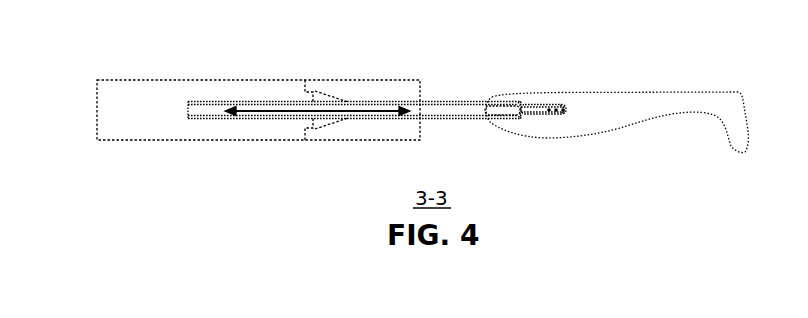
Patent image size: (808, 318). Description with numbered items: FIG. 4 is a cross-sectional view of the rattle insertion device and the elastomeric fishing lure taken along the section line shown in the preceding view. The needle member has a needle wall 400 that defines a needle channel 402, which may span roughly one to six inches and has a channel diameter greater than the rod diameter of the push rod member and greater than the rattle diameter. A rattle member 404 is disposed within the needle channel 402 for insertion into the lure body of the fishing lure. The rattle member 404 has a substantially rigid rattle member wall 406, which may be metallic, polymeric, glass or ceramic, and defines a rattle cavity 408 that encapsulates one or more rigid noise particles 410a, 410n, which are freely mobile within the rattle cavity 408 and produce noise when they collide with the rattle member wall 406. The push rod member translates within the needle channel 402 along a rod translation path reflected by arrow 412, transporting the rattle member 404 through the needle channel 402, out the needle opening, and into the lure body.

The needle wall 400 is at (472, 103).
The needle channel 402 is at (521, 101).
The rattle member 404 is at (541, 110).
The rattle member wall 406 is at (533, 114).
The rattle cavity 408 is at (532, 110).
The noise particle 410a is at (548, 114).
The noise particle 410n is at (565, 112).
The arrow 412 is at (258, 111).